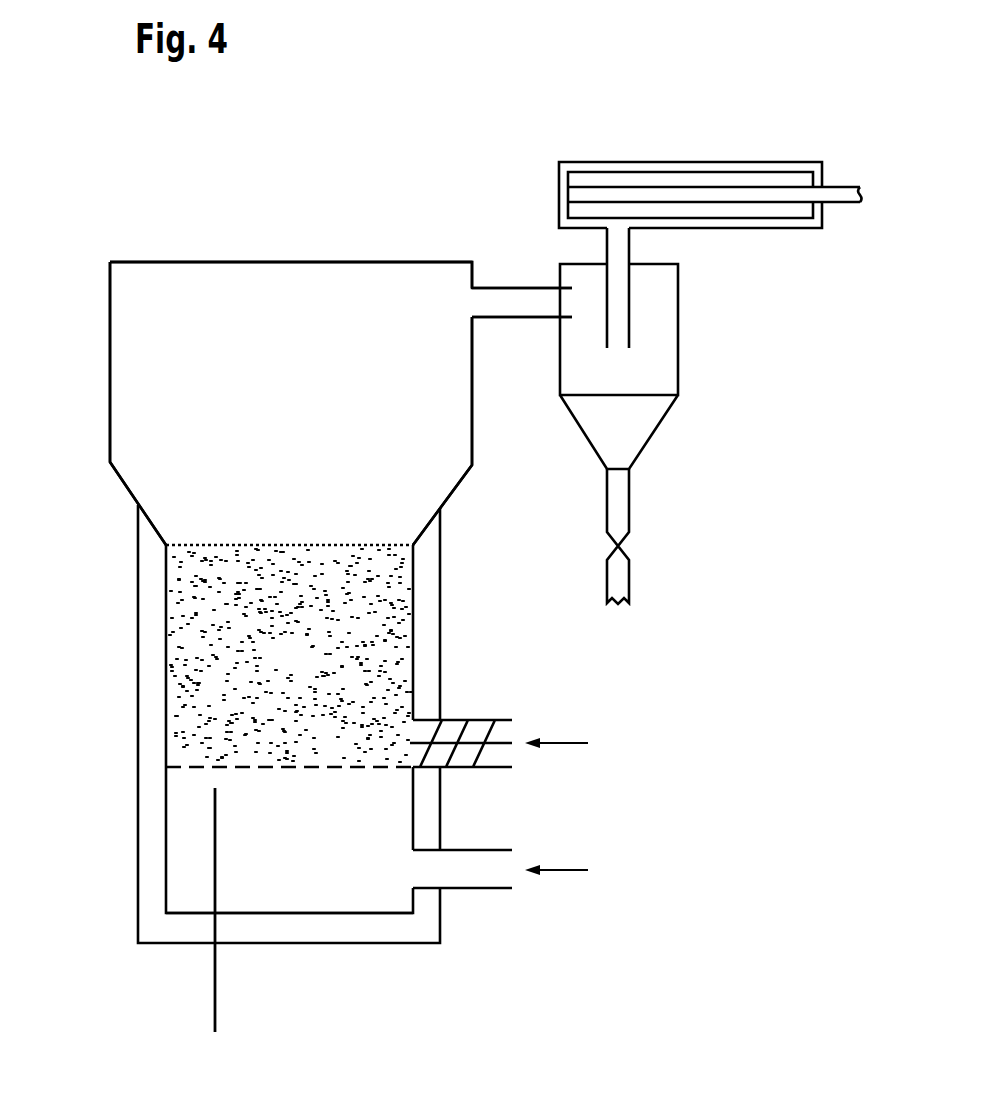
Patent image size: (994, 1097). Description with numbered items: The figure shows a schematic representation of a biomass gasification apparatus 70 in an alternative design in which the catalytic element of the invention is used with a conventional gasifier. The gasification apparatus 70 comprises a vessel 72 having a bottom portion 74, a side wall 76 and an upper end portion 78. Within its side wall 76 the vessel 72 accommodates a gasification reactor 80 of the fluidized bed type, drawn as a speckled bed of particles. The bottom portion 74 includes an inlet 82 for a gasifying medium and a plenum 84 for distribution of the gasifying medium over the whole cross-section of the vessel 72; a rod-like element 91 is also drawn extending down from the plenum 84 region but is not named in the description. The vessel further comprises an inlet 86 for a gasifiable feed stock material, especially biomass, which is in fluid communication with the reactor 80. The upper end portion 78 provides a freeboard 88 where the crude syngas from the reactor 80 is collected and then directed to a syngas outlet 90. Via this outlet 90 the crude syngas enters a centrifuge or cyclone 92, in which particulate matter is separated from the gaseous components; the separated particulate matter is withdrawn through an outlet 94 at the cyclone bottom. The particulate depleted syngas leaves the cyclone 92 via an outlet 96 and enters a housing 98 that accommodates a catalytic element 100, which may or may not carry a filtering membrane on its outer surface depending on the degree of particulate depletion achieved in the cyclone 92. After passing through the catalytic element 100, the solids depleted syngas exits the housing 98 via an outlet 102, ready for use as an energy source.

The gasification apparatus 70 is at (492, 204).
The vessel 72 is at (112, 501).
The bottom portion 74 is at (122, 899).
The side wall 76 is at (166, 688).
The upper end portion 78 is at (288, 250).
The gasification reactor 80 is at (302, 663).
The inlet 82 is at (497, 890).
The plenum 84 is at (302, 884).
The inlet 86 is at (497, 720).
The freeboard 88 is at (312, 514).
The syngas outlet 90 is at (522, 287).
The rod 91 is at (213, 1002).
The cyclone 92 is at (710, 336).
The outlet 94 is at (629, 540).
The outlet 96 is at (631, 245).
The housing 98 is at (706, 162).
The catalytic element 100 is at (773, 180).
The outlet 102 is at (848, 187).